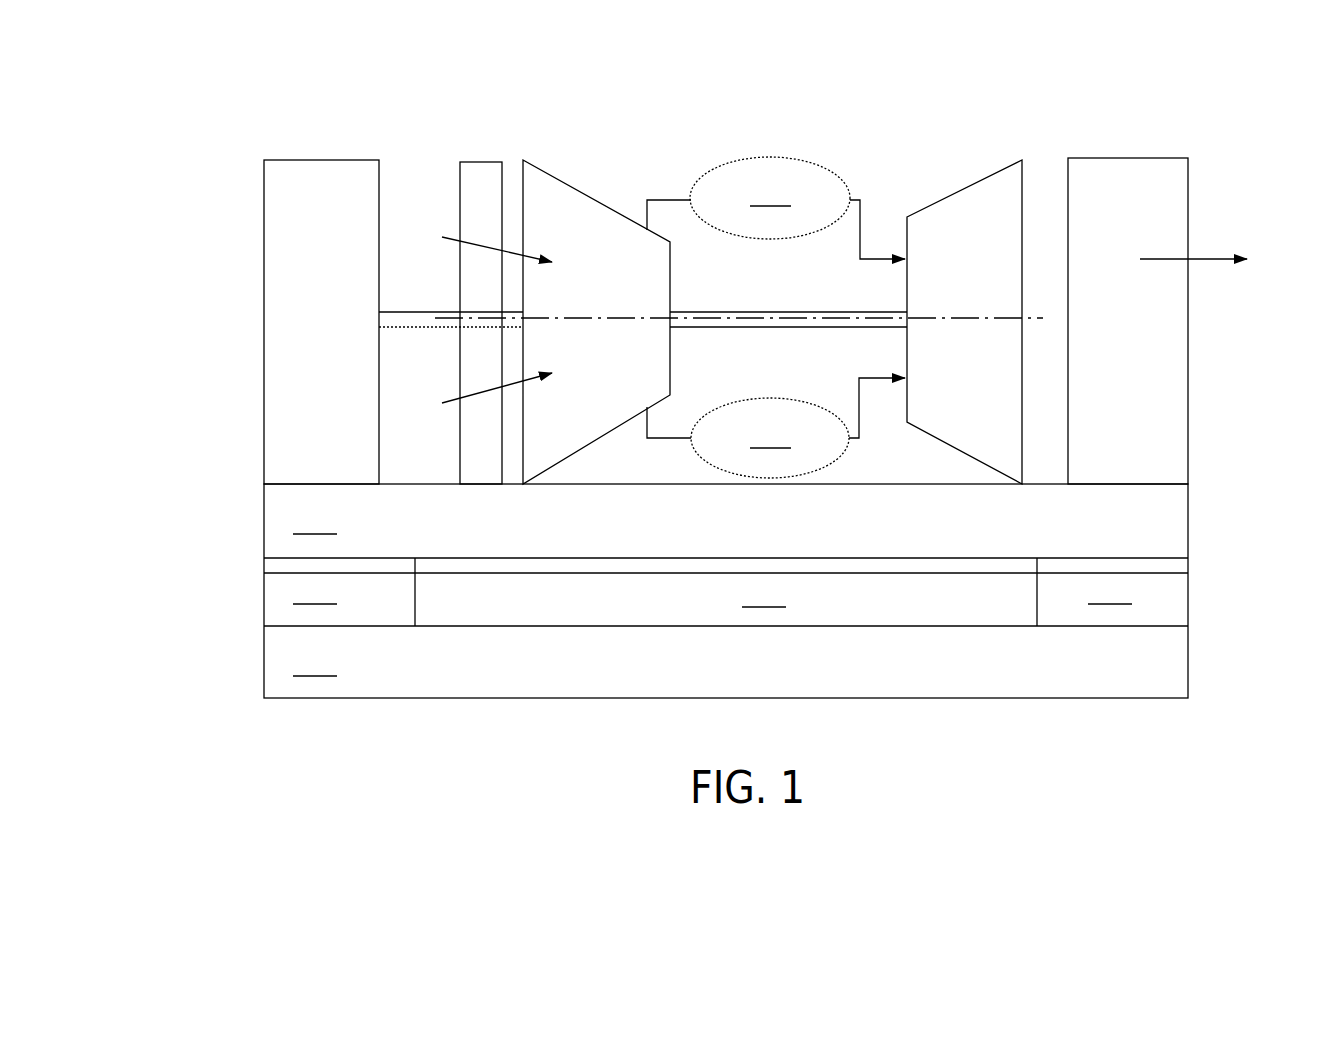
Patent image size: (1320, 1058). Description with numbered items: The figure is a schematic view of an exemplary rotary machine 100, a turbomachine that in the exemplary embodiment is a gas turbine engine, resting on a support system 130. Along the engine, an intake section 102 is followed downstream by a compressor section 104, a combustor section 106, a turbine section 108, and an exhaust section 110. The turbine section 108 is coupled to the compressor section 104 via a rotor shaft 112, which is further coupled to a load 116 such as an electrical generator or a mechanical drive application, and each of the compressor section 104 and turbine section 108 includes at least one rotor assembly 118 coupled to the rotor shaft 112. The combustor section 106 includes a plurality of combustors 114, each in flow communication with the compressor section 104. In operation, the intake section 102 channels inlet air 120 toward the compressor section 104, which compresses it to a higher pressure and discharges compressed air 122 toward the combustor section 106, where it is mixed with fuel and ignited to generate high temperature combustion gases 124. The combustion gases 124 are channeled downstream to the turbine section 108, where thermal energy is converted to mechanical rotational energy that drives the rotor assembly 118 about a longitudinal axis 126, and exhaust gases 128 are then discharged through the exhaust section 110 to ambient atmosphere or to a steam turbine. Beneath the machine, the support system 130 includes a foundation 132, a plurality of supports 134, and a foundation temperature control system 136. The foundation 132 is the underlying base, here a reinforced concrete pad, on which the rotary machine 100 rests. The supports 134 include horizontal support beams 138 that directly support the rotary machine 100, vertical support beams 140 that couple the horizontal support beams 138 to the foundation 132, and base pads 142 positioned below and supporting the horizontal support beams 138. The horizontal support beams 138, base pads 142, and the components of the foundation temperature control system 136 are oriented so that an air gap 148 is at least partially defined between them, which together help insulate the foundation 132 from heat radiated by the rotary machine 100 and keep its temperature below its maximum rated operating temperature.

The rotary machine 100 is at (866, 112).
The intake section 102 is at (478, 162).
The compressor section 104 is at (541, 170).
The combustor section 106 is at (788, 160).
The turbine section 108 is at (992, 175).
The exhaust section 110 is at (1128, 157).
The rotor shaft 112 is at (792, 330).
The combustor 114 is at (770, 317).
The load 116 is at (318, 160).
The rotor assembly 118 is at (586, 182).
The inlet air 120 is at (442, 237).
The compressed air 122 is at (654, 200).
The combustion gases 124 is at (850, 217).
The longitudinal axis 126 is at (1027, 317).
The exhaust gases 128 is at (1202, 253).
The support system 130 is at (224, 534).
The foundation 132 is at (316, 664).
The supports 134 is at (232, 623).
The foundation temperature control system 136 is at (765, 595).
The horizontal support beams 138 is at (726, 533).
The vertical support beams 140 is at (713, 592).
The base pads 142 is at (306, 560).
The air gap 148 is at (1000, 568).